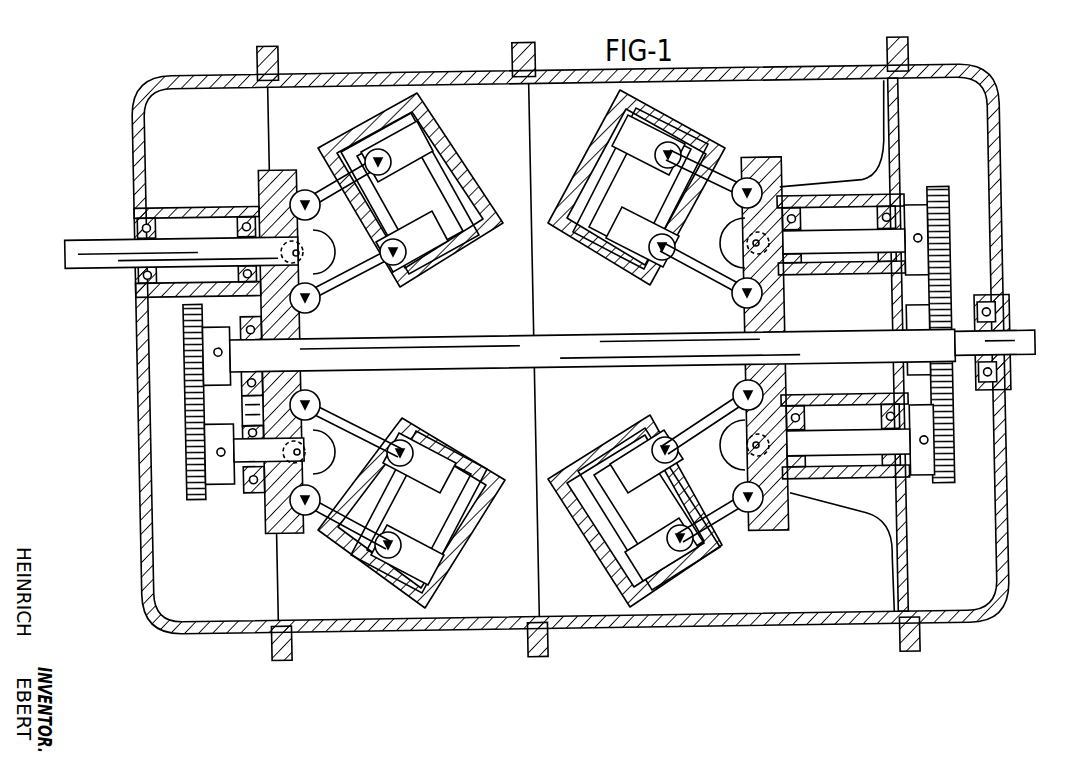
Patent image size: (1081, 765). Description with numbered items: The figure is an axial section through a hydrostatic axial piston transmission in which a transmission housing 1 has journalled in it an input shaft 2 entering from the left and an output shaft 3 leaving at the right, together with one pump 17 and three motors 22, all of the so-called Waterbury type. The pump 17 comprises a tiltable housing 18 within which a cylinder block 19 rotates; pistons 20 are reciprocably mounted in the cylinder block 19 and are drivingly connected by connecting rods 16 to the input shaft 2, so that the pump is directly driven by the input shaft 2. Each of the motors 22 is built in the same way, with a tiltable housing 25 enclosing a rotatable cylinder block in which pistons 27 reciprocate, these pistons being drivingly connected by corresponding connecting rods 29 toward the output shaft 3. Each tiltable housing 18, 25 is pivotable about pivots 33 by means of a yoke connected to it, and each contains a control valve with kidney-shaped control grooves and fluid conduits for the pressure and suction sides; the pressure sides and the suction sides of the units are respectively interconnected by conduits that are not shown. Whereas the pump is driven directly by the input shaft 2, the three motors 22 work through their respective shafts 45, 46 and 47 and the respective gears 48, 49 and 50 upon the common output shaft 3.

The transmission housing 1 is at (405, 78).
The input shaft 2 is at (95, 242).
The output shaft 3 is at (1028, 338).
The connecting rods 16 is at (320, 178).
The pump 17 is at (333, 135).
The tiltable housing 18 is at (426, 143).
The cylinder block 19 is at (410, 162).
The pistons 20 is at (380, 148).
The motors 22 is at (579, 134).
The tiltable housing 25 is at (680, 131).
The pistons 27 is at (696, 158).
The connecting rods 29 is at (741, 178).
The pivots 33 is at (313, 258).
The motor shaft 45 is at (246, 460).
The motor shaft 46 is at (826, 242).
The motor shaft 47 is at (832, 448).
The gear 48 is at (197, 494).
The gear 49 is at (932, 202).
The gear 50 is at (950, 486).